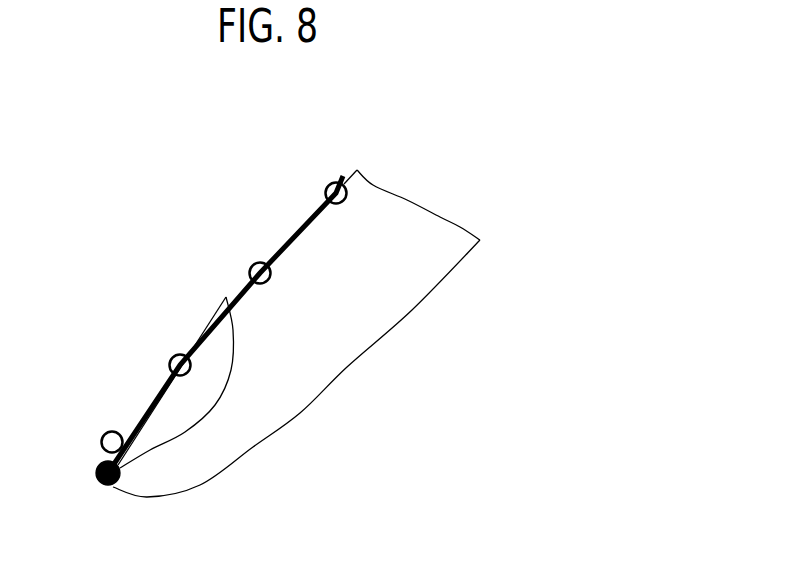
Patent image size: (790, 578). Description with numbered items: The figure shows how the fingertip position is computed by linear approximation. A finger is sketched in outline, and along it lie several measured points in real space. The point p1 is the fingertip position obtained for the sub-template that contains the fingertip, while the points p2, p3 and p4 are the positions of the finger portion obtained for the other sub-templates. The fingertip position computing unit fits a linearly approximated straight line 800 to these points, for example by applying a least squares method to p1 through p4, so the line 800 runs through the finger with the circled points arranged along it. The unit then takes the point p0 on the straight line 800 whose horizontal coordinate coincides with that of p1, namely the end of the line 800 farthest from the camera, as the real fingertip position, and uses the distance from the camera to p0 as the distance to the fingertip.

The linearly approximated straight line 800 is at (300, 220).
The real fingertip position p0 is at (122, 473).
The fingertip position from fingertip sub-template p1 is at (101, 431).
The finger portion position p2 is at (169, 357).
The finger portion position p3 is at (251, 264).
The finger portion position p4 is at (328, 184).